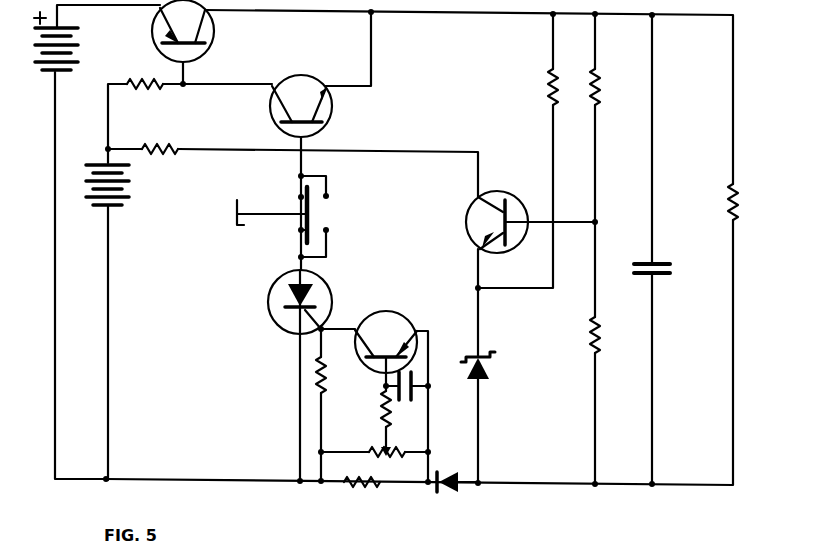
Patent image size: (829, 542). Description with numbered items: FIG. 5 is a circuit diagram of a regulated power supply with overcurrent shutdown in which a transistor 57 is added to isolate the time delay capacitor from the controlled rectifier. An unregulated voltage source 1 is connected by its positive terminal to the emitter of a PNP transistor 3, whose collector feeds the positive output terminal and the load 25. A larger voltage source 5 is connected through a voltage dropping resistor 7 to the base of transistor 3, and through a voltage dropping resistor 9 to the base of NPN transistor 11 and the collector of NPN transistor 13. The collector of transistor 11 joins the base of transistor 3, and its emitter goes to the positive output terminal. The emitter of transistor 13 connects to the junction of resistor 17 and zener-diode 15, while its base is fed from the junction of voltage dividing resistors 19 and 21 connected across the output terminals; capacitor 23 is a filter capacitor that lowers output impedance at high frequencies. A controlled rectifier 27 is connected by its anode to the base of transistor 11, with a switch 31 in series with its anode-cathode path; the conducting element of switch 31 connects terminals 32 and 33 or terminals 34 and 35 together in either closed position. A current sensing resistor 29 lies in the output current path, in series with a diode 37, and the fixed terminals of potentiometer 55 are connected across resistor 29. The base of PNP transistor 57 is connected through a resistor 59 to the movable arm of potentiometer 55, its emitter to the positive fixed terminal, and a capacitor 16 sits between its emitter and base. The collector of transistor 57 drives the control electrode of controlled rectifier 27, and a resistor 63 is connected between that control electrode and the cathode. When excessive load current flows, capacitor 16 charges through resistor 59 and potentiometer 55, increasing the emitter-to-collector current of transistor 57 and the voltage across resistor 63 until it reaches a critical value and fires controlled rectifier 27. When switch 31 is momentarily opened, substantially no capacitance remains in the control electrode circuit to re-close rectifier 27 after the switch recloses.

The unregulated voltage source 1 is at (66, 29).
The PNP transistor 3 is at (206, 37).
The voltage source 5 is at (129, 194).
The voltage dropping resistor 7 is at (147, 88).
The voltage dropping resistor 9 is at (166, 145).
The NPN transistor 11 is at (327, 115).
The NPN transistor 13 is at (488, 192).
The zener-diode 15 is at (490, 380).
The capacitor 16 is at (414, 376).
The resistor 17 is at (550, 89).
The voltage dividing resistor 19 is at (599, 86).
The voltage dividing resistor 21 is at (599, 320).
The filter capacitor 23 is at (660, 275).
The load resistor 25 is at (729, 197).
The controlled rectifier 27 is at (320, 298).
The current sensing resistor 29 is at (361, 489).
The switch 31 is at (270, 213).
The terminal 32 is at (301, 197).
The terminal 33 is at (301, 231).
The terminal 34 is at (327, 196).
The terminal 35 is at (327, 230).
The diode 37 is at (449, 492).
The potentiometer 55 is at (381, 456).
The PNP transistor 57 is at (388, 321).
The resistor 59 is at (389, 408).
The resistor 63 is at (327, 384).